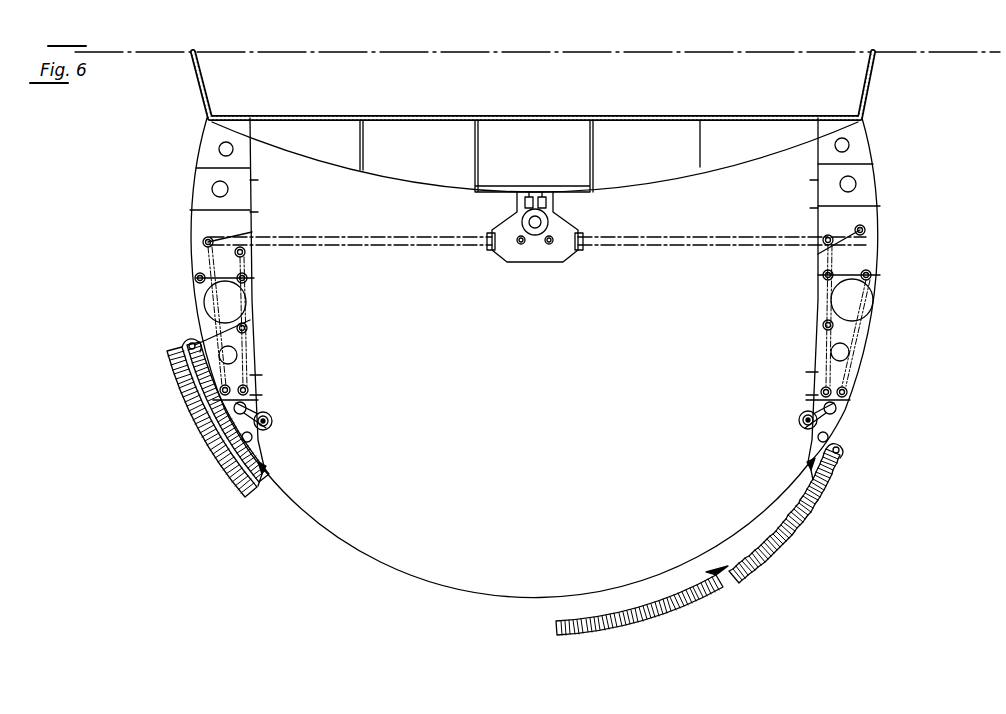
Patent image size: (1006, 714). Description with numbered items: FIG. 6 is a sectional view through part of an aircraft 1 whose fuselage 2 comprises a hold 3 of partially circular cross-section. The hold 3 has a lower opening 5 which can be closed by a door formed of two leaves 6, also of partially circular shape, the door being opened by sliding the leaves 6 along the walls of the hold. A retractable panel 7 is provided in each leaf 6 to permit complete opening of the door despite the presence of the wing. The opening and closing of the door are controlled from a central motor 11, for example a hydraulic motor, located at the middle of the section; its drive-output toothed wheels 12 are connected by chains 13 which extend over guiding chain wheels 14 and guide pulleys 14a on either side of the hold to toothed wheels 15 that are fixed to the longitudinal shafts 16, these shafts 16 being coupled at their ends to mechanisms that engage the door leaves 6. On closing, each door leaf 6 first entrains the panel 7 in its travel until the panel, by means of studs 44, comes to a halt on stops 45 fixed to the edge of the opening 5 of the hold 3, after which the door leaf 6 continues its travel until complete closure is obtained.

The aircraft 1 is at (880, 125).
The fuselage 2 is at (535, 156).
The hold 3 is at (537, 492).
The lower opening 5 is at (270, 468).
The door leaf 6 is at (222, 480).
The retractable panel 7 is at (182, 414).
The central motor 11 is at (535, 235).
The drive-output toothed wheels 12 is at (519, 244).
The chains 13 is at (372, 252).
The guiding chain wheels 14 is at (205, 240).
The guide pulleys 14a is at (195, 284).
The toothed wheels 15 is at (272, 417).
The longitudinal shafts 16 is at (276, 426).
The studs 44 is at (192, 341).
The stops 45 is at (264, 480).